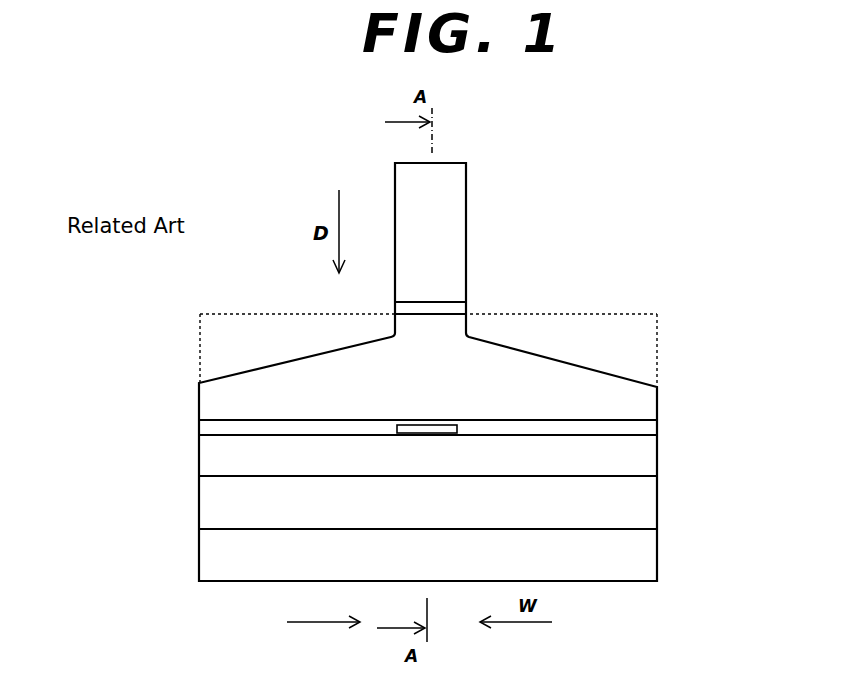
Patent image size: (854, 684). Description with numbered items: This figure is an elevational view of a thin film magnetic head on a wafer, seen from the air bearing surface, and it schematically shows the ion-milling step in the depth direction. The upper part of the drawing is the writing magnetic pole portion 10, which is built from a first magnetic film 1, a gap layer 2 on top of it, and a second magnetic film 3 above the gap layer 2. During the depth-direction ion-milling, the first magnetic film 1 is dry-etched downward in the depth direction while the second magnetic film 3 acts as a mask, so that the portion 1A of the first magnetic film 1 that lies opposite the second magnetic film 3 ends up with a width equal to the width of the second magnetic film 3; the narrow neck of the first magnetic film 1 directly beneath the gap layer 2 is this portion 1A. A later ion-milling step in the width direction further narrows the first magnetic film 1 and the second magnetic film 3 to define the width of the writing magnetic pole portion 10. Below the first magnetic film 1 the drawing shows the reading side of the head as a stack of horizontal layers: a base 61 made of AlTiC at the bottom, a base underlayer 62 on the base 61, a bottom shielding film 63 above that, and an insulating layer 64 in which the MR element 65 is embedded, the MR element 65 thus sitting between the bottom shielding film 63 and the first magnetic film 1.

The writing magnetic pole portion 10 is at (437, 346).
The first magnetic film 1 is at (625, 407).
The portion of the first magnetic film 1A is at (448, 330).
The gap layer 2 is at (457, 312).
The second magnetic film 3 is at (450, 227).
The base 61 is at (635, 551).
The base underlayer 62 is at (637, 497).
The bottom shielding film 63 is at (632, 451).
The insulating layer 64 is at (625, 427).
The MR element 65 is at (407, 435).